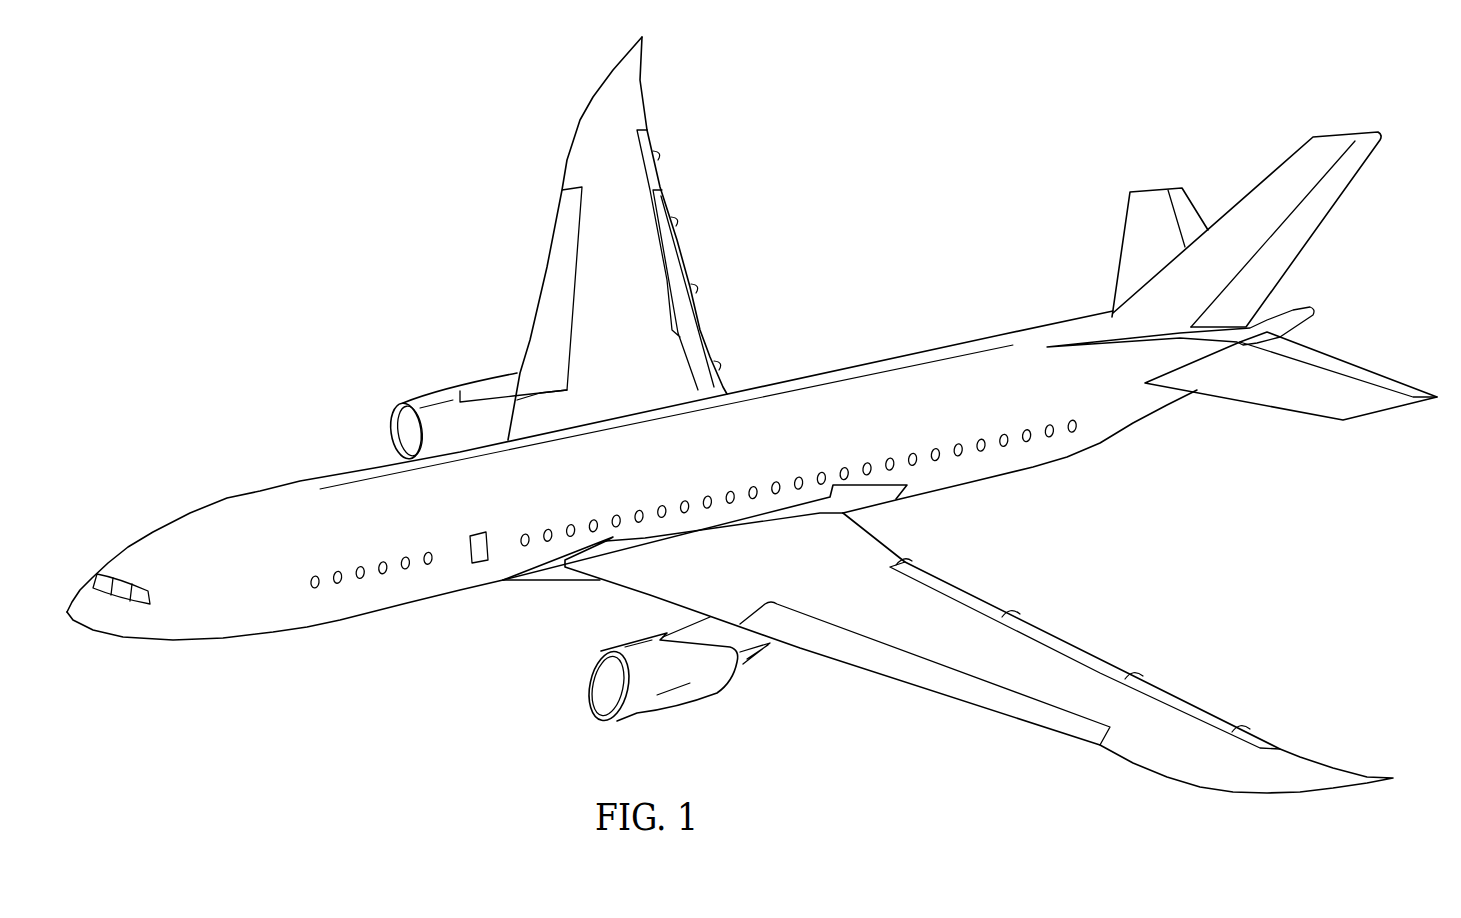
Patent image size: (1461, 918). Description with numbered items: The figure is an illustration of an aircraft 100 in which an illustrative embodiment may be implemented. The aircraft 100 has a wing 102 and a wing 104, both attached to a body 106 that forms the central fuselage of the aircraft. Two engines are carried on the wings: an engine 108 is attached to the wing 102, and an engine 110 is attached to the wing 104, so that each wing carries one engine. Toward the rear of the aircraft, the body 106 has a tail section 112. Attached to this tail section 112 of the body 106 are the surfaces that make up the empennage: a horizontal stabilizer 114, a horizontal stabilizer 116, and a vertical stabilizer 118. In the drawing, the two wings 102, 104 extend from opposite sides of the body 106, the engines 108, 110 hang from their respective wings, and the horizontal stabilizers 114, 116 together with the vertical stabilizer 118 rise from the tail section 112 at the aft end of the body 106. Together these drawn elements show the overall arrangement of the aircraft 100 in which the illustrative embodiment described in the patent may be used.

The aircraft 100 is at (348, 192).
The wing 102 is at (641, 73).
The wing 104 is at (1237, 790).
The body 106 is at (248, 495).
The engine 108 is at (432, 390).
The engine 110 is at (677, 712).
The tail section 112 is at (1195, 455).
The horizontal stabilizer 114 is at (1120, 250).
The horizontal stabilizer 116 is at (1293, 410).
The vertical stabilizer 118 is at (1323, 217).